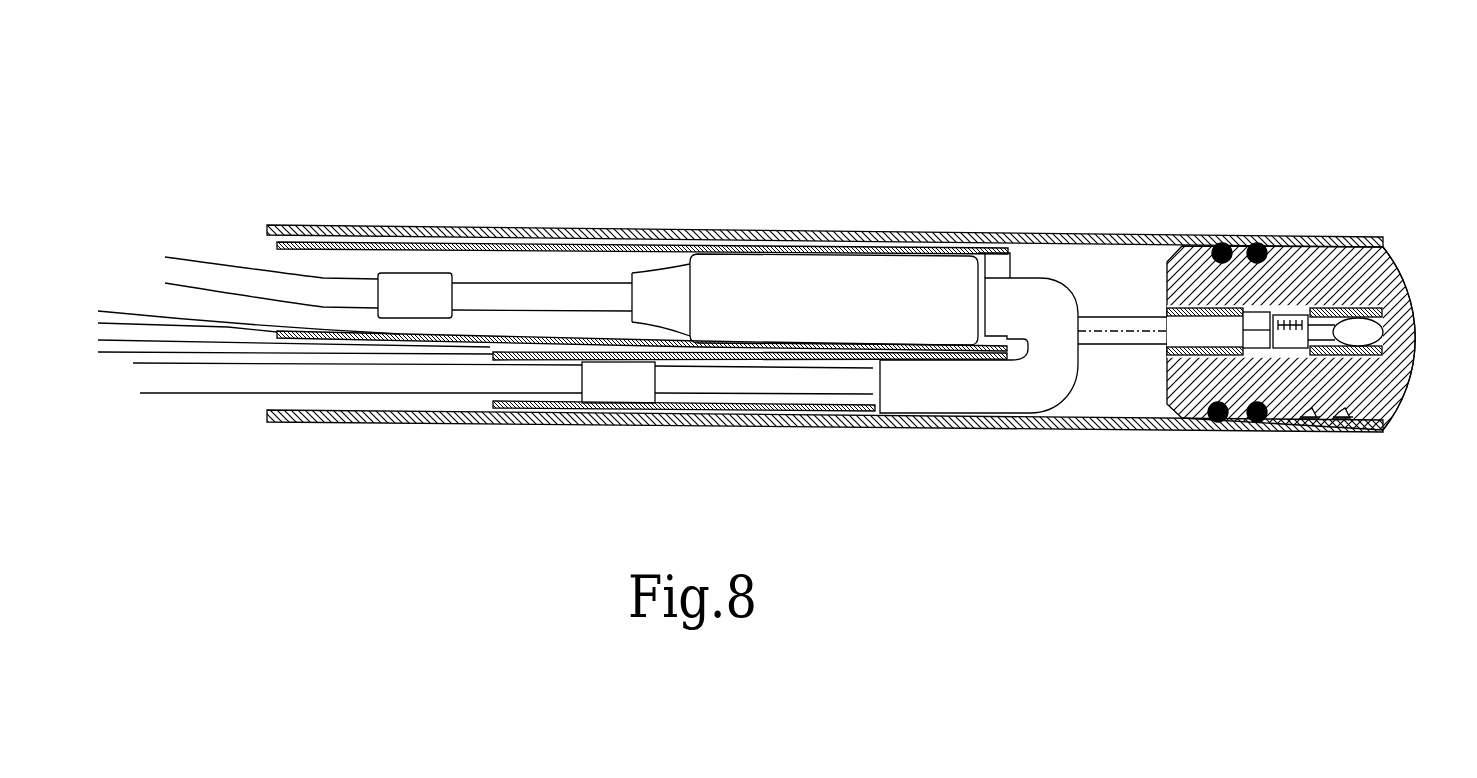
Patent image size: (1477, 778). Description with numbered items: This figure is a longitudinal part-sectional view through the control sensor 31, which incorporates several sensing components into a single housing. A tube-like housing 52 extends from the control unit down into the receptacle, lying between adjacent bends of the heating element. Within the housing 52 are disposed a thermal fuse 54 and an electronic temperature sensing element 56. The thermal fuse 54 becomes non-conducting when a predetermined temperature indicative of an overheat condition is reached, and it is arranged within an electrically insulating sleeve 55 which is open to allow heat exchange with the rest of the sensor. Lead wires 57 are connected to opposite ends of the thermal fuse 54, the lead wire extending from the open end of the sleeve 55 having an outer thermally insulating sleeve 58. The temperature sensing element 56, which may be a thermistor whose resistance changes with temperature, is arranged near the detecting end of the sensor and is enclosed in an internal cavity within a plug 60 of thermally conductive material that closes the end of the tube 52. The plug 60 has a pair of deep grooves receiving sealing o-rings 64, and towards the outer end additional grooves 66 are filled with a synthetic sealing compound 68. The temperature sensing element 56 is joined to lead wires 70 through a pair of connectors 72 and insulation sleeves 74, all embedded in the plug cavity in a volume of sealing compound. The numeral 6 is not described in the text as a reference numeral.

The sensor 31 is at (702, 185).
The tube-like housing 52 is at (777, 233).
The thermal fuse 54 is at (917, 242).
The electrically insulating sleeve 55 is at (995, 263).
The electronic temperature sensing element 56 is at (1385, 243).
The lead wires 57 is at (190, 383).
The outer thermally insulating sleeve 58 is at (1045, 290).
The plug 60 is at (1180, 272).
The sealing o-rings 64 is at (1258, 338).
The additional grooves 66 is at (1342, 420).
The synthetic sealing compound 68 is at (1307, 413).
The lead wires 70 is at (258, 353).
The connectors 72 is at (1303, 340).
The insulation sleeves 74 is at (1357, 330).
The sealing rings 6 is at (1248, 420).